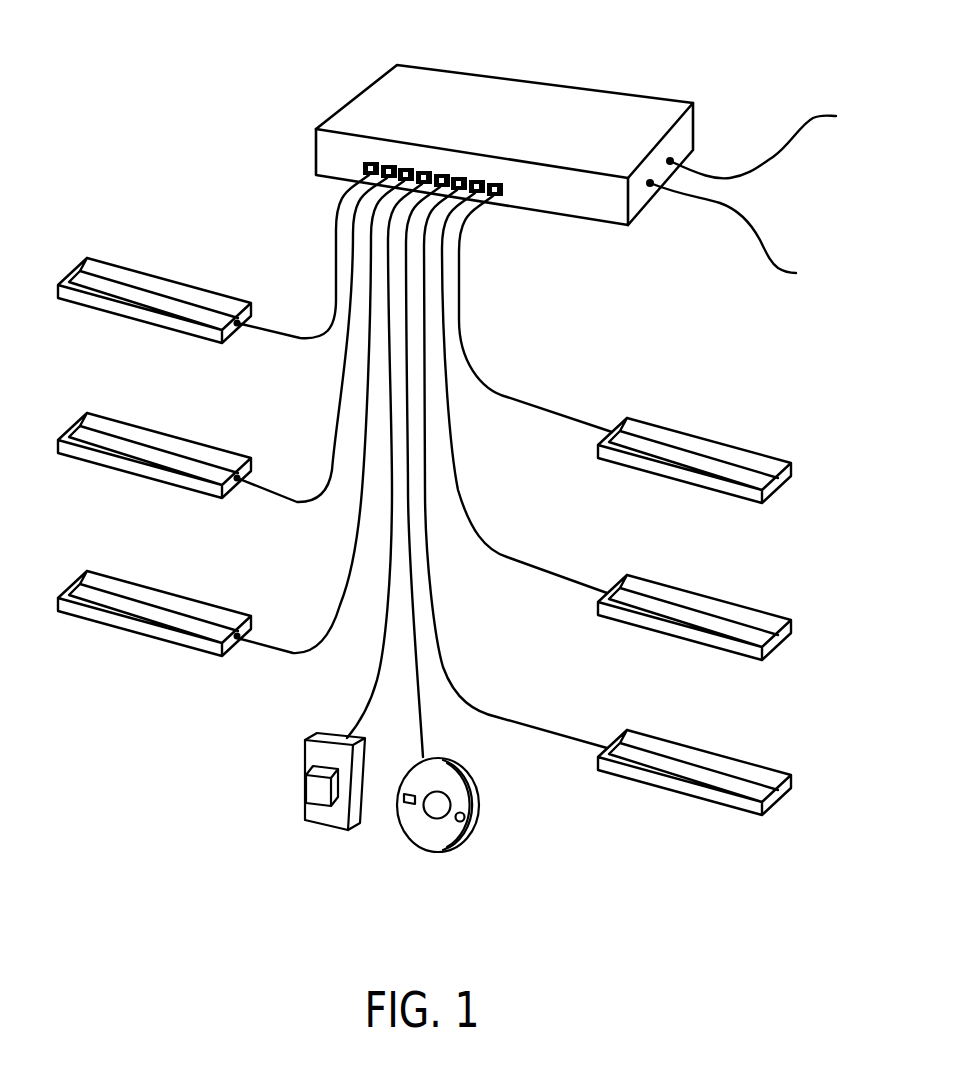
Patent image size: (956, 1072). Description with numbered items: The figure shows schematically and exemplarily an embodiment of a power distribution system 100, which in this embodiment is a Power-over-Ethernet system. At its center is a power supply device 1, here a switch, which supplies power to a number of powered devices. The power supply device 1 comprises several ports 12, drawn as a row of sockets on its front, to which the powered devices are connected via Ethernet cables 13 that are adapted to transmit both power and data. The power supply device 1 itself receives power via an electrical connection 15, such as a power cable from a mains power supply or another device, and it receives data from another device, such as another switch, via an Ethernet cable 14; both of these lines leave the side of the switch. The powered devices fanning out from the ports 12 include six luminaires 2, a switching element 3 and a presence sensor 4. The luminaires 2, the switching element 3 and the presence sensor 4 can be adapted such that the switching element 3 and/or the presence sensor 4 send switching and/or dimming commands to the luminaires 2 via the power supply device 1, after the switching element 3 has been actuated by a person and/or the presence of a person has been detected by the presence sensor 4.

The power distribution system 100 is at (185, 58).
The power supply device 1 is at (656, 209).
The ports 12 is at (420, 157).
The Ethernet cables 13 is at (325, 240).
The Ethernet cable 14 is at (760, 160).
The electrical connection 15 is at (773, 265).
The luminaires 2 is at (135, 278).
The switching element 3 is at (312, 778).
The presence sensor 4 is at (475, 835).